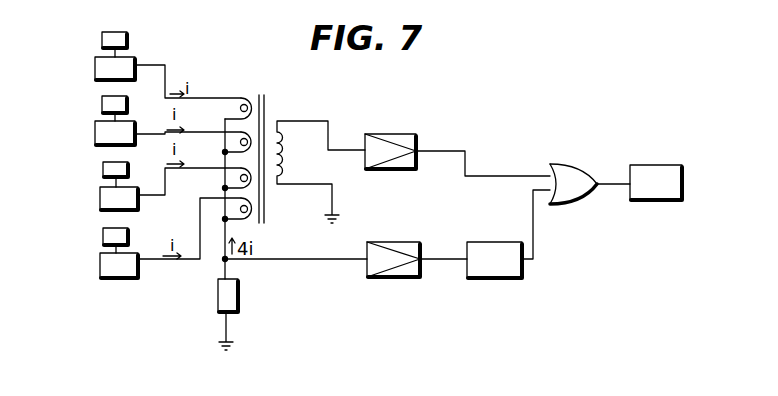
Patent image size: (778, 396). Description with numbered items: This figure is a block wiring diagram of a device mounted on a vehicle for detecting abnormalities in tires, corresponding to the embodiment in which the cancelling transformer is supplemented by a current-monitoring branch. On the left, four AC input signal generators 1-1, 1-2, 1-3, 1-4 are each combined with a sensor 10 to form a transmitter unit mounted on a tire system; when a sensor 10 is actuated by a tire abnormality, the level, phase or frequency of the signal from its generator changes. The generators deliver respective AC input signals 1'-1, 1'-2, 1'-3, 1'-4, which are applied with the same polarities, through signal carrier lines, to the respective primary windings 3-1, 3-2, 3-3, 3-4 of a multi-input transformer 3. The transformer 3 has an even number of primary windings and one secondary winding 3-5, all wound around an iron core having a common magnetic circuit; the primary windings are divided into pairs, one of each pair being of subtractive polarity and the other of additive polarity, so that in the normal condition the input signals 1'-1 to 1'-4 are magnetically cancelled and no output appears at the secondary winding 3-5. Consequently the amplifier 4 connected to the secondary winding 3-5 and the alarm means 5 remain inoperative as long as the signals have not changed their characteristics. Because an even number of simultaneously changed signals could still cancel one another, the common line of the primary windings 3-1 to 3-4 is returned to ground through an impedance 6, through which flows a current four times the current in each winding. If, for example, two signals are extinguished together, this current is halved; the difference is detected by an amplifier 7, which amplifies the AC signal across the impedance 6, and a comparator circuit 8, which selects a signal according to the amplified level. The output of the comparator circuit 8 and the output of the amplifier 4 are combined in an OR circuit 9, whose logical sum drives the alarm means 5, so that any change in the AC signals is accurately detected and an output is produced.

The AC input signal generator 1-1 is at (94, 34).
The AC input signal generator 1-2 is at (94, 98).
The AC input signal generator 1-3 is at (95, 163).
The AC input signal generator 1-4 is at (95, 229).
The sensor 10 is at (87, 61).
The AC input signal 1'-1 is at (188, 68).
The AC input signal 1'-2 is at (188, 121).
The AC input signal 1'-3 is at (189, 196).
The AC input signal 1'-4 is at (189, 246).
The multi-input transformer 3 is at (251, 86).
The primary winding 3-1 is at (233, 100).
The primary winding 3-2 is at (233, 134).
The primary winding 3-3 is at (233, 170).
The primary winding 3-4 is at (239, 205).
The secondary winding 3-5 is at (282, 153).
The amplifier 4 is at (369, 127).
The alarm means 5 is at (648, 157).
The impedance 6 is at (231, 288).
The amplifier 7 is at (376, 235).
The comparator circuit 8 is at (475, 235).
The OR circuit 9 is at (569, 157).